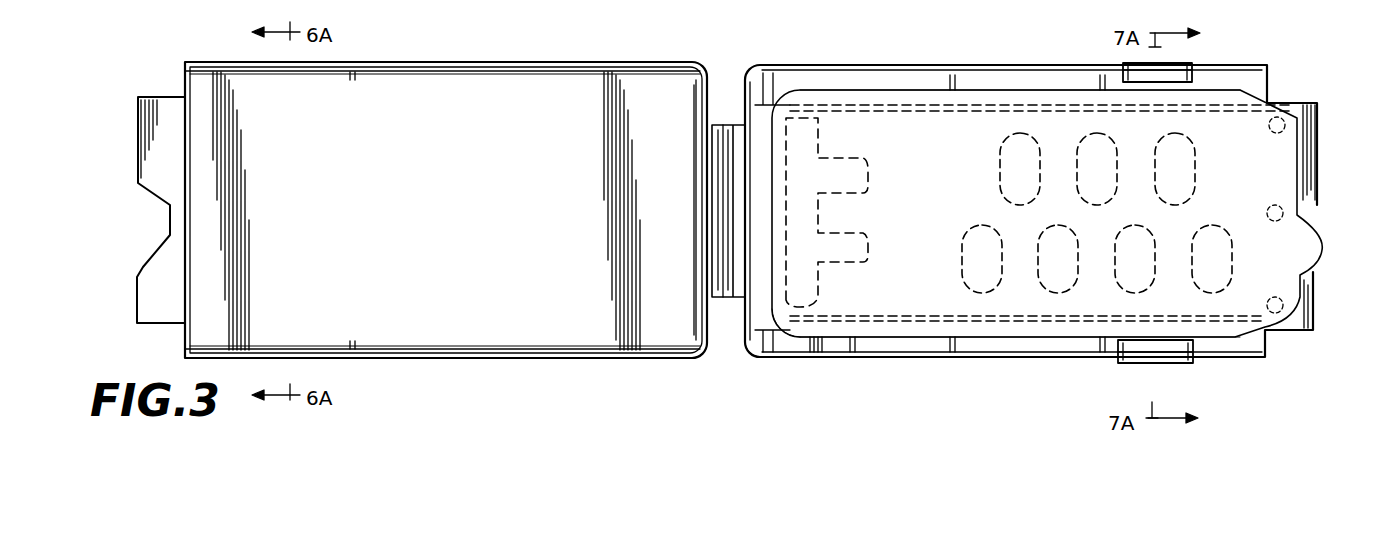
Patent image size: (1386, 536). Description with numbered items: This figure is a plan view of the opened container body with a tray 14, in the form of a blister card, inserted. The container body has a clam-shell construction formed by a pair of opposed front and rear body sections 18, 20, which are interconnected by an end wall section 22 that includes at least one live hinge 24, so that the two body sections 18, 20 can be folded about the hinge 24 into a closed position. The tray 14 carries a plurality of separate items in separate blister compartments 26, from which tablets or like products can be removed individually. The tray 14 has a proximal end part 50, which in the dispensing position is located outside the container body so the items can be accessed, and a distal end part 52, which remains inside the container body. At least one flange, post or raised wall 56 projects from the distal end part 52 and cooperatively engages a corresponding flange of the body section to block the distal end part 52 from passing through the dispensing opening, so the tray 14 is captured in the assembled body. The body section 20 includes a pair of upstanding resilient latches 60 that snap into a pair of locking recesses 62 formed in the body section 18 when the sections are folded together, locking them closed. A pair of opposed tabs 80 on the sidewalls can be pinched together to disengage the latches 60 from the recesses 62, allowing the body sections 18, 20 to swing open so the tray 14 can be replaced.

The tray 14 is at (1255, 158).
The front body section 18 is at (478, 358).
The rear body section 20 is at (920, 360).
The end wall section 22 is at (728, 122).
The hinge 24 is at (708, 225).
The blister compartments 26 is at (1040, 225).
The proximal end part 50 is at (1090, 300).
The distal end part 52 is at (795, 360).
The flange 56 is at (832, 140).
The latches 60 is at (1182, 66).
The locking recesses 62 is at (298, 72).
The tabs 80 is at (1140, 362).